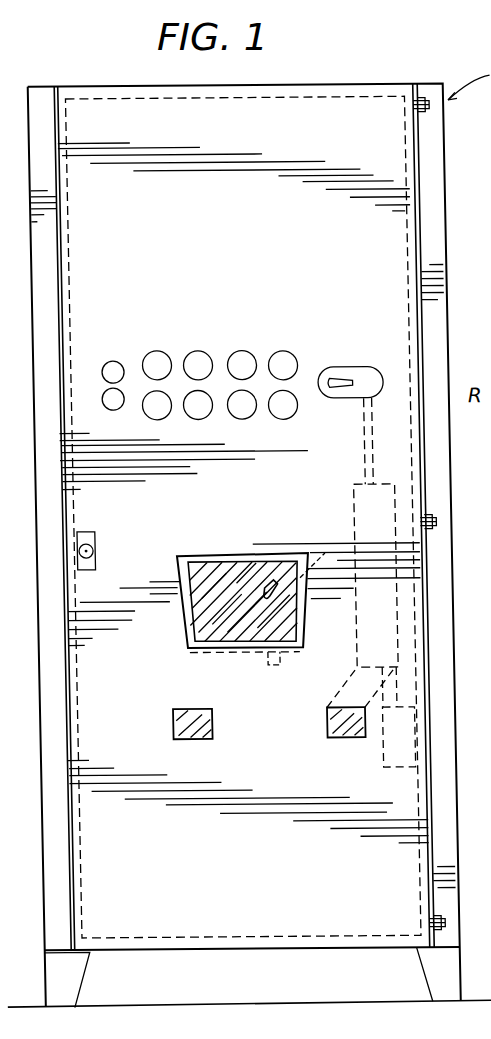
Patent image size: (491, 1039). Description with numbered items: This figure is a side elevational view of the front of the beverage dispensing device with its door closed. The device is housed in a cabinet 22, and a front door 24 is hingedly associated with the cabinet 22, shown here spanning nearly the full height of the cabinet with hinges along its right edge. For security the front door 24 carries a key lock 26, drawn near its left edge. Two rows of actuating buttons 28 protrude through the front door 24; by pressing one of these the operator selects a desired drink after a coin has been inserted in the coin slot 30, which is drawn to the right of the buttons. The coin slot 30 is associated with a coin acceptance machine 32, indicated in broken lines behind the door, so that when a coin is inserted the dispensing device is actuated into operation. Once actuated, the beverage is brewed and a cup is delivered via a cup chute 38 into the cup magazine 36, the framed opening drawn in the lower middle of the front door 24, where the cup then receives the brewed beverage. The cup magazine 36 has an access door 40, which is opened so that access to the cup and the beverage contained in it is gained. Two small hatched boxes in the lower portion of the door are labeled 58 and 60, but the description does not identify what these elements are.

The cabinet 22 is at (423, 184).
The front door 24 is at (273, 206).
The key lock 26 is at (82, 552).
The actuating buttons 28 is at (186, 364).
The coin slot 30 is at (350, 383).
The coin acceptance machine 32 is at (345, 520).
The cup magazine 36 is at (175, 650).
The cup chute 38 is at (273, 597).
The access door 40 is at (193, 615).
The hatched face of box 58 is at (186, 728).
The box 60 is at (159, 726).